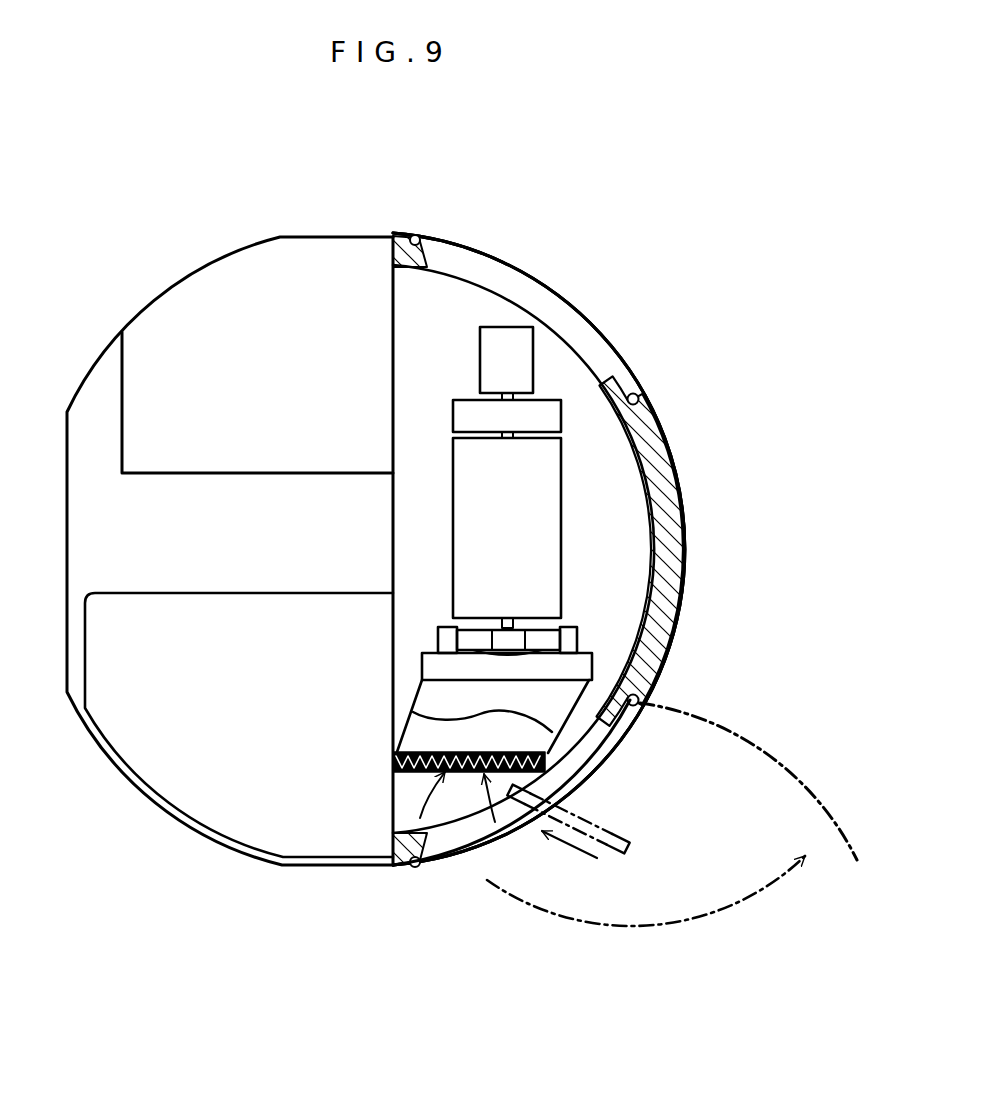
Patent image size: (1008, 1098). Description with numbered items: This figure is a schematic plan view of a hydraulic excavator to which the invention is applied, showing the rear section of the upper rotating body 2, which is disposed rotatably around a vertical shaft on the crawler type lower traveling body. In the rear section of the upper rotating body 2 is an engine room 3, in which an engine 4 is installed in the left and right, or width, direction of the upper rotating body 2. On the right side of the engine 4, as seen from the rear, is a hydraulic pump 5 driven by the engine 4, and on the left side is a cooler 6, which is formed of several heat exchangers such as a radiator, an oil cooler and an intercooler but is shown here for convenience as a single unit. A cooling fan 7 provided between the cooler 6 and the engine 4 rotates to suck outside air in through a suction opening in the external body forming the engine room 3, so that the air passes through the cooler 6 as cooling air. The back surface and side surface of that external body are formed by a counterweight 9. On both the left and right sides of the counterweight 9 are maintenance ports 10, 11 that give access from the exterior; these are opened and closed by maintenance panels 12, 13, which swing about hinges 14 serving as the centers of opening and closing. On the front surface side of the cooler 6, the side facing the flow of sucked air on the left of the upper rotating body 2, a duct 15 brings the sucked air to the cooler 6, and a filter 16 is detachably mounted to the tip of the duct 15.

The upper rotating body 2 is at (207, 235).
The engine room 3 is at (603, 460).
The engine 4 is at (562, 563).
The hydraulic pump 5 is at (503, 327).
The cooler 6 is at (593, 665).
The cooling fan 7 is at (437, 640).
The counterweight 9 is at (683, 503).
The maintenance port 10 is at (508, 822).
The maintenance port 11 is at (590, 348).
The maintenance panel 12 is at (770, 755).
The maintenance panel 13 is at (565, 304).
The hinge 14 is at (641, 400).
The duct 15 is at (403, 727).
The filter 16 is at (460, 787).